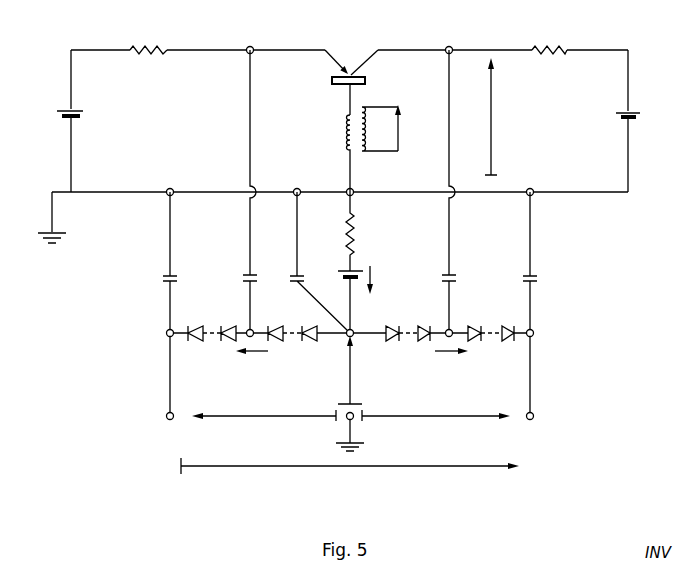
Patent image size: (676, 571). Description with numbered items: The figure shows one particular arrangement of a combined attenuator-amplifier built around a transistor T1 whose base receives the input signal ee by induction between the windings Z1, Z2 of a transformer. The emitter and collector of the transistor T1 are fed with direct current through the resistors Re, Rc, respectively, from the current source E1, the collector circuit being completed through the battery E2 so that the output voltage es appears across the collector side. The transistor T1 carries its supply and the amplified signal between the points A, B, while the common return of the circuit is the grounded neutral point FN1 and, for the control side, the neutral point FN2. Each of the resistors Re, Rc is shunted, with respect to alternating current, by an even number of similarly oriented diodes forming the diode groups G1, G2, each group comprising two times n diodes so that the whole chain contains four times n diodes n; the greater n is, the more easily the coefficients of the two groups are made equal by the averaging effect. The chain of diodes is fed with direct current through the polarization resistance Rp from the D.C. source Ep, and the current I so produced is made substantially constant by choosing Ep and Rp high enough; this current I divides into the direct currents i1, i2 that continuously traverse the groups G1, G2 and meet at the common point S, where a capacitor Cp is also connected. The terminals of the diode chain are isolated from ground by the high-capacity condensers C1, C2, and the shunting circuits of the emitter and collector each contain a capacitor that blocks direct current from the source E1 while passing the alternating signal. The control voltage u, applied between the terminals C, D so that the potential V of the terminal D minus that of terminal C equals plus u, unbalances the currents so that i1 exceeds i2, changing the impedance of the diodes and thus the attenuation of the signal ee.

The emitter resistor Re is at (148, 41).
The collector resistor Rc is at (549, 41).
The point A is at (250, 181).
The point B is at (449, 181).
The current source E1 is at (64, 112).
The collector supply battery E2 is at (638, 115).
The transistor T1 is at (332, 81).
The transformer winding Z1 is at (380, 129).
The transformer winding Z2 is at (344, 126).
The input signal ee is at (405, 128).
The output voltage es is at (496, 116).
The polarization resistance Rp is at (359, 231).
The D.C. source Ep is at (336, 296).
The current I is at (373, 280).
The condenser C1 is at (178, 304).
The capacitor Cp is at (309, 262).
The condenser C2 is at (542, 304).
The diode count parameter n is at (350, 329).
The diode group G1 is at (258, 324).
The diode group G2 is at (457, 324).
The node S is at (356, 325).
The direct current i1 is at (252, 359).
The direct current i2 is at (451, 359).
The voltage V is at (355, 370).
The control voltage u is at (453, 392).
The terminal C is at (160, 416).
The terminal D is at (538, 416).
The ground (neutral point) FN1 is at (51, 230).
The ground (neutral point) FN2 is at (350, 437).